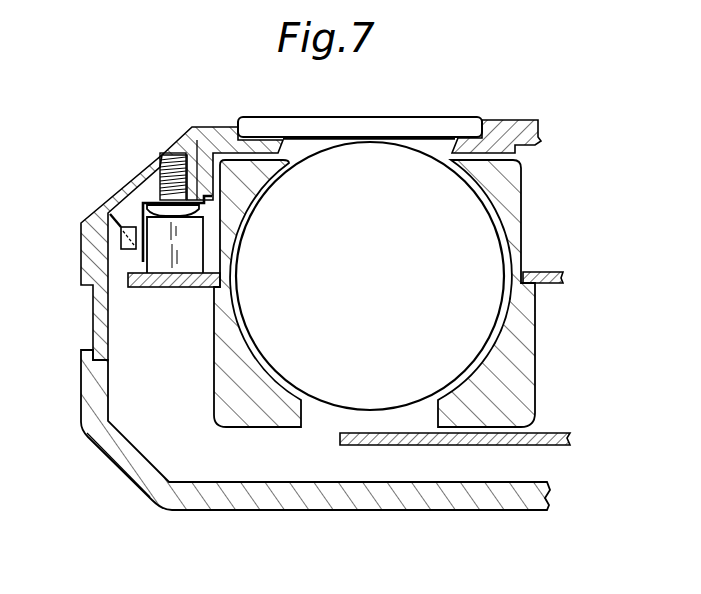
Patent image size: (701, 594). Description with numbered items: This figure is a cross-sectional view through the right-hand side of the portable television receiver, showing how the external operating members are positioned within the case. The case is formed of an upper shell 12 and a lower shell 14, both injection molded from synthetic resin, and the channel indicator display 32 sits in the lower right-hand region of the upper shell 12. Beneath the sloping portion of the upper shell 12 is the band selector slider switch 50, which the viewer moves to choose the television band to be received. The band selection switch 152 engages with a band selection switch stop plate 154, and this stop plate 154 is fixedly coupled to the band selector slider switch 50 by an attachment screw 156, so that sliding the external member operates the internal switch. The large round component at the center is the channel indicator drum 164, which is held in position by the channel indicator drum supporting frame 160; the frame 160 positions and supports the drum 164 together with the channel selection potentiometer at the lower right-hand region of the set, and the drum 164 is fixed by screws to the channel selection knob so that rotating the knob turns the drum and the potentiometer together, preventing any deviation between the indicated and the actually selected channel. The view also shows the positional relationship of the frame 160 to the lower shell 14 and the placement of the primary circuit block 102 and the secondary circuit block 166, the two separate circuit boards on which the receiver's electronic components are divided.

The upper shell 12 is at (82, 251).
The lower shell 14 is at (438, 492).
The channel indicator display 32 is at (291, 136).
The band selector slider switch 50 is at (200, 127).
The primary circuit block 102 is at (547, 272).
The band selection switch 152 is at (143, 208).
The band selection switch stop plate 154 is at (108, 201).
The attachment screw 156 is at (160, 153).
The channel indicator drum supporting frame 160 is at (509, 350).
The channel indicator drum 164 is at (370, 165).
The secondary circuit block 166 is at (547, 429).